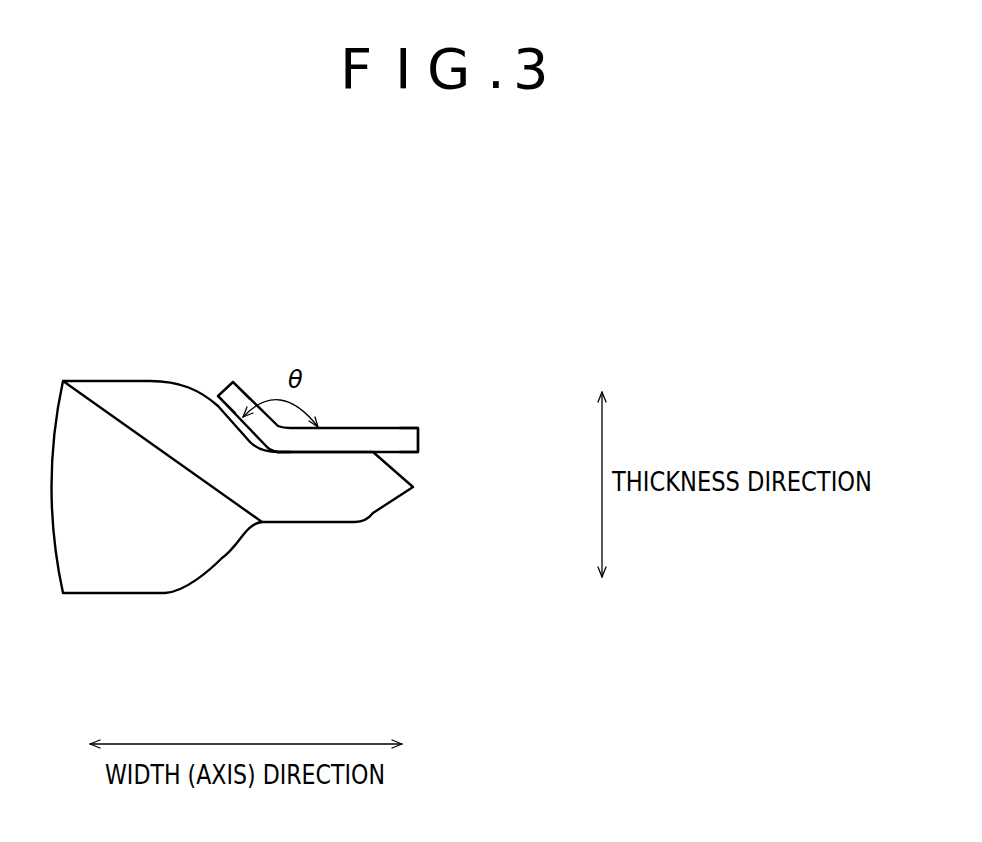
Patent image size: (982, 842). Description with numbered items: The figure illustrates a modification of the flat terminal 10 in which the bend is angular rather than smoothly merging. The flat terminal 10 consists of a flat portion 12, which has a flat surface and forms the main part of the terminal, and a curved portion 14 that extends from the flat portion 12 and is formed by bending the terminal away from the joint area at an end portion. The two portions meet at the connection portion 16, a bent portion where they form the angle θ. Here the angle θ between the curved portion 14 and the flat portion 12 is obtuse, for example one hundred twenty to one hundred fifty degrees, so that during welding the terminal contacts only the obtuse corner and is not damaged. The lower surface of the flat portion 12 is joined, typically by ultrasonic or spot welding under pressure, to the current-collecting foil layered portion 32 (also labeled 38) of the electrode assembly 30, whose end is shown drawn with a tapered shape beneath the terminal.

The flat terminal 10 is at (362, 425).
The flat portion 12 is at (408, 427).
The curved portion 14 is at (237, 382).
The connection portion 16 is at (277, 457).
The electrode assembly 30 is at (138, 597).
The current-collecting foil layered portion 32 is at (340, 536).
The protrusion (alternate designation) 38 is at (325, 527).